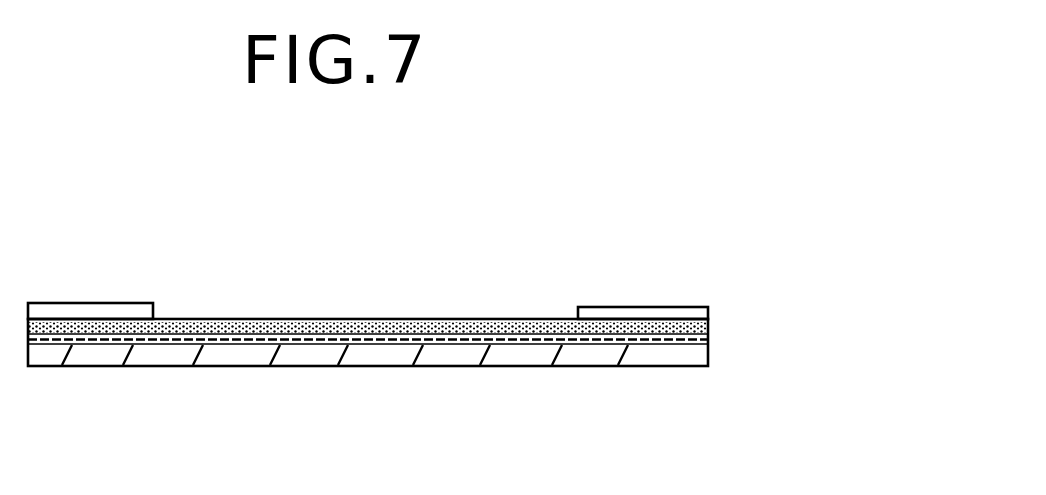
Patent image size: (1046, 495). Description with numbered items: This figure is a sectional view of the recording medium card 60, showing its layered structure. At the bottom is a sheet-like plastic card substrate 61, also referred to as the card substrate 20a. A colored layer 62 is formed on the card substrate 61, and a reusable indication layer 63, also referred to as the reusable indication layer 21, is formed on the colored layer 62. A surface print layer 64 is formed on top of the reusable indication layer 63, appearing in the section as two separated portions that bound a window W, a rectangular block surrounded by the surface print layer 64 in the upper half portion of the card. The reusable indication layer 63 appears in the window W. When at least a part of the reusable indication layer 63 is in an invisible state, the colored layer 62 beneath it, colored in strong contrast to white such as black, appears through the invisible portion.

The recording medium card 60 is at (465, 277).
The card substrate 61 is at (465, 395).
The card substrate 20a is at (700, 366).
The colored layer 62 is at (706, 340).
The reusable indication layer 63 is at (368, 220).
The reusable indication layer 21 is at (480, 320).
The surface print layer 64 is at (122, 305).
The window W is at (406, 298).